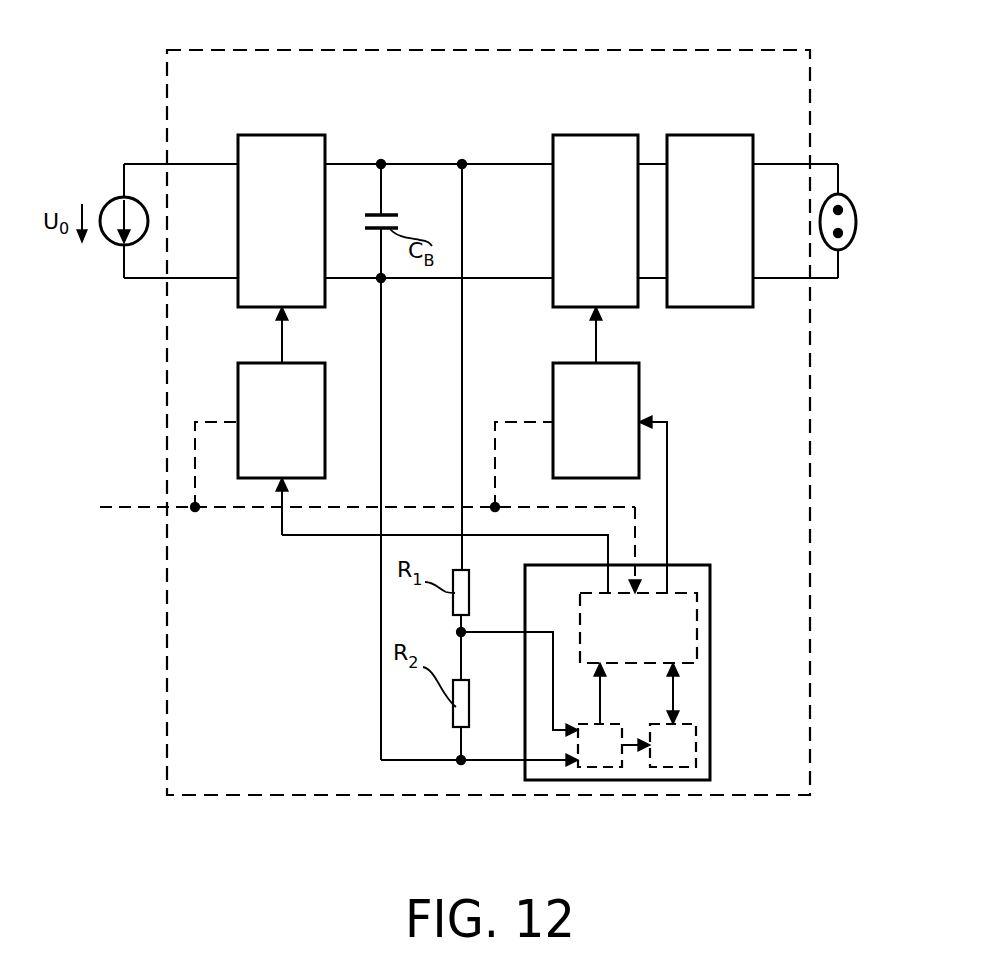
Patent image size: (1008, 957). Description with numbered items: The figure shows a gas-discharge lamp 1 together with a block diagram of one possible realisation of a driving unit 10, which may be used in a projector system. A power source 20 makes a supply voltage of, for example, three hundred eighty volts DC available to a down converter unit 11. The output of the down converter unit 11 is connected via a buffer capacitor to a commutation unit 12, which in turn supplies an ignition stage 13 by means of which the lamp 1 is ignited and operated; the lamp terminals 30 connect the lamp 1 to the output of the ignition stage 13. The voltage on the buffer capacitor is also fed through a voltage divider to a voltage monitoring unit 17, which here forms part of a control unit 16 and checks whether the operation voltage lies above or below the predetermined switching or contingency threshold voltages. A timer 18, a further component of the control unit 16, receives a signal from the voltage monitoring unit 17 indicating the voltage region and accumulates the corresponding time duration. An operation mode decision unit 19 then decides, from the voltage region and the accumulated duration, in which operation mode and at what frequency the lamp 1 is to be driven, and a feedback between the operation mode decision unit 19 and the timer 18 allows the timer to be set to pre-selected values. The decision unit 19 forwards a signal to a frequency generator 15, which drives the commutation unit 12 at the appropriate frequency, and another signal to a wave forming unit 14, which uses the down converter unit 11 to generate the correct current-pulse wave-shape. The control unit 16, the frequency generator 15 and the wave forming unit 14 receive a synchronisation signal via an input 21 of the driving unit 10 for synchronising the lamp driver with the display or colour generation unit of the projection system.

The gas-discharge lamp 1 is at (848, 234).
The driving unit 10 is at (513, 50).
The down converter unit 11 is at (288, 142).
The commutation unit 12 is at (608, 142).
The ignition stage 13 is at (722, 142).
The wave forming unit 14 is at (300, 392).
The frequency generator 15 is at (627, 386).
The control unit 16 is at (644, 703).
The voltage monitoring unit 17 is at (606, 758).
The timer 18 is at (690, 742).
The operation mode decision unit 19 is at (690, 620).
The power source 20 is at (110, 212).
The input 21 is at (130, 507).
The lamp terminals 30 is at (840, 210).